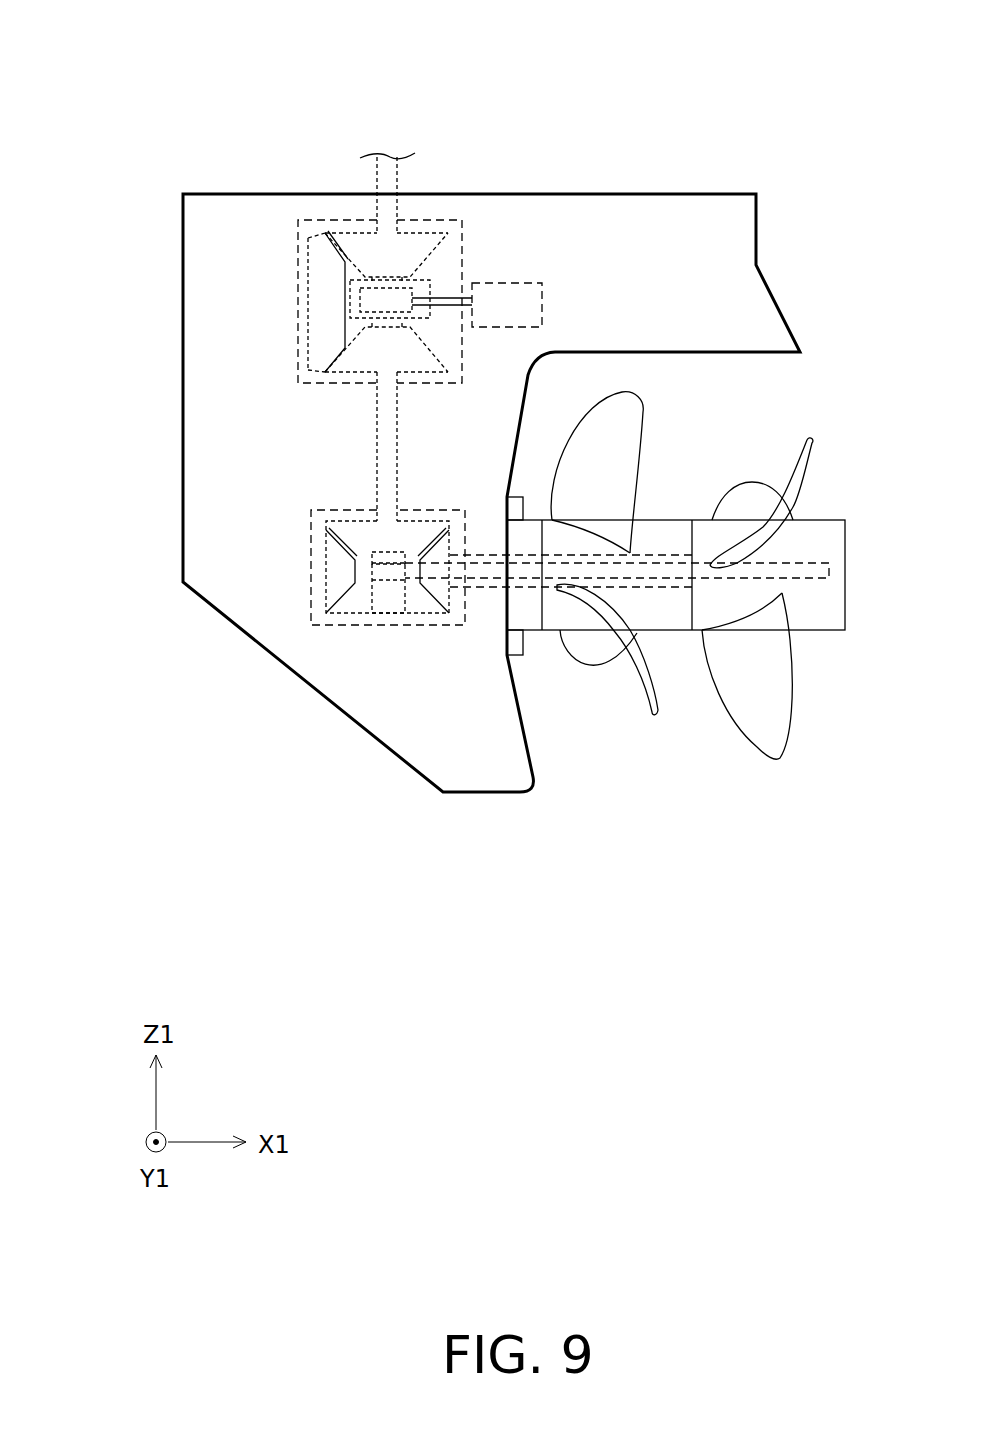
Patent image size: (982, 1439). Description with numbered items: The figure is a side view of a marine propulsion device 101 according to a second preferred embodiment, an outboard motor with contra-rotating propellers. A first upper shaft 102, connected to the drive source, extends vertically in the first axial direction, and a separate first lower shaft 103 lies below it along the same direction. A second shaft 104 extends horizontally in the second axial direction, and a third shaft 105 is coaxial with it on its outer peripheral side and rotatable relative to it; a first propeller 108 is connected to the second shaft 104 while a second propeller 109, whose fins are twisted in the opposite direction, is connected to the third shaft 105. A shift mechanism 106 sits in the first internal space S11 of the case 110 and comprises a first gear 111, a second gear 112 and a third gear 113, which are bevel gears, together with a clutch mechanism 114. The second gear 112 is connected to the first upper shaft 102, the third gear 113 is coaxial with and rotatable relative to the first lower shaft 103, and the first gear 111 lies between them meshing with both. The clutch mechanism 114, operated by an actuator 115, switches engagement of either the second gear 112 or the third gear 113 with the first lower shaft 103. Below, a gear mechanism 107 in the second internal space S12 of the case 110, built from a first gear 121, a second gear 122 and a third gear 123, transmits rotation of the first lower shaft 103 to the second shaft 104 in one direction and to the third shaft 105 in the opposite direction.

The marine propulsion device 101 is at (283, 125).
The first upper shaft 102 is at (398, 178).
The first lower shaft 103 is at (377, 422).
The second shaft 104 is at (743, 577).
The third shaft 105 is at (672, 593).
The shift mechanism 106 is at (277, 230).
The gear mechanism 107 is at (297, 578).
The first propeller 108 is at (823, 610).
The second propeller 109 is at (578, 617).
The case 110 is at (287, 673).
The first gear 111 is at (308, 320).
The second gear 112 is at (310, 253).
The third gear 113 is at (343, 352).
The clutch mechanism 114 is at (378, 273).
The actuator 115 is at (507, 283).
The first gear 121 is at (355, 518).
The second gear 122 is at (342, 603).
The third gear 123 is at (437, 603).
The first internal space S11 is at (308, 285).
The second internal space S12 is at (311, 553).